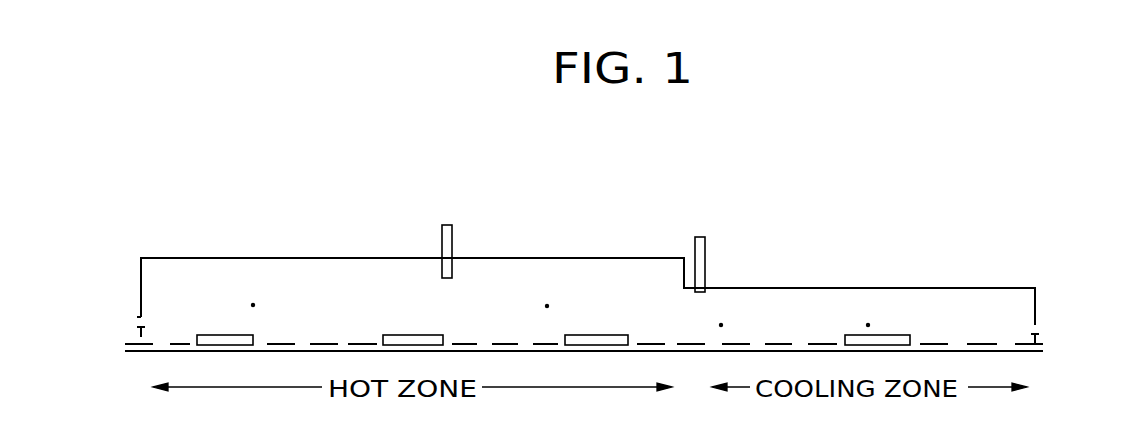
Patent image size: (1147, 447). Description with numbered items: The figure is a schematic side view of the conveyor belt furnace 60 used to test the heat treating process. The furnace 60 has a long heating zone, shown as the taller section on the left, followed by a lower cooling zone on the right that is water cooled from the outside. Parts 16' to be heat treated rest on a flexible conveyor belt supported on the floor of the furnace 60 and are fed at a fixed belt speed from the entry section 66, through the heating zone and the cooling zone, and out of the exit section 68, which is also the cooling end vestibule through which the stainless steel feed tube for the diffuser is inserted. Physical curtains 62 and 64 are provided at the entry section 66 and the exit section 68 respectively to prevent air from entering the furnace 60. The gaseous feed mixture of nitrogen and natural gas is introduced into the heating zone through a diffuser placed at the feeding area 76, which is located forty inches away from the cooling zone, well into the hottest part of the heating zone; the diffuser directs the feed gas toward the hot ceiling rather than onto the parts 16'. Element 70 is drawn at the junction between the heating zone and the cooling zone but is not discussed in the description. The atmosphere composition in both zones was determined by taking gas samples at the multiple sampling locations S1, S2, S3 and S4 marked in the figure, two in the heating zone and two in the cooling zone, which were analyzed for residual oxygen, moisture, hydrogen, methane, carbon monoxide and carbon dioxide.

The furnace 60 is at (357, 254).
The physical curtain 62 is at (141, 328).
The physical curtain 64 is at (1036, 334).
The entry section 66 is at (141, 282).
The exit section 68 is at (1036, 312).
The baffle between hot zone and cooling zone 70 is at (706, 251).
The feeding area 76 is at (453, 241).
The parts 16' is at (553, 328).
The temperature sensor 1 S1 is at (254, 290).
The temperature sensor 2 S2 is at (544, 292).
The temperature sensor 3 S3 is at (722, 311).
The temperature sensor 4 S4 is at (871, 311).